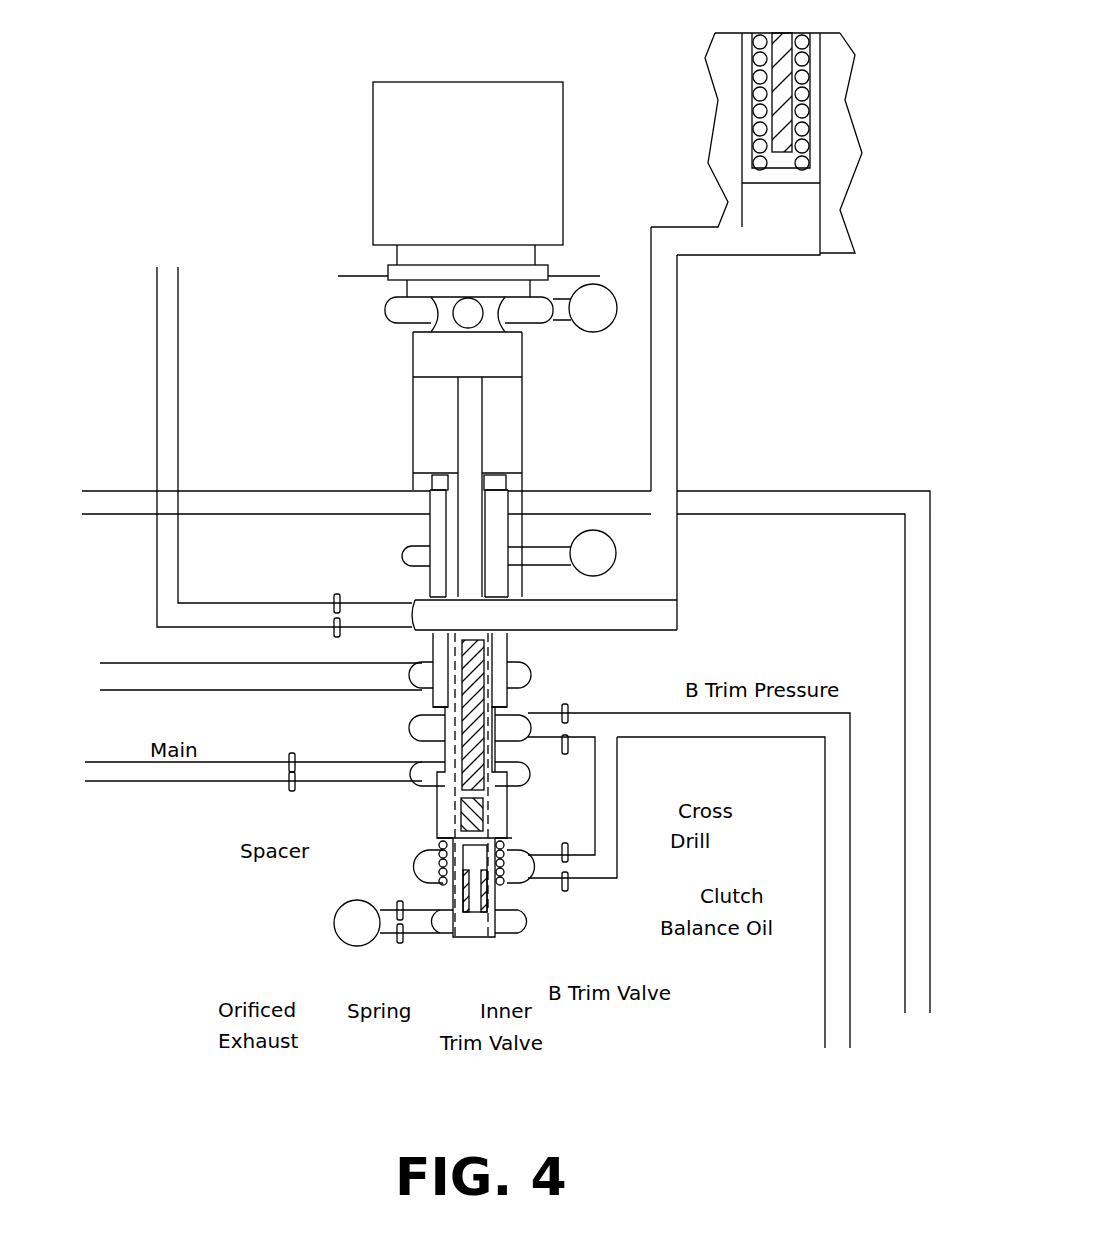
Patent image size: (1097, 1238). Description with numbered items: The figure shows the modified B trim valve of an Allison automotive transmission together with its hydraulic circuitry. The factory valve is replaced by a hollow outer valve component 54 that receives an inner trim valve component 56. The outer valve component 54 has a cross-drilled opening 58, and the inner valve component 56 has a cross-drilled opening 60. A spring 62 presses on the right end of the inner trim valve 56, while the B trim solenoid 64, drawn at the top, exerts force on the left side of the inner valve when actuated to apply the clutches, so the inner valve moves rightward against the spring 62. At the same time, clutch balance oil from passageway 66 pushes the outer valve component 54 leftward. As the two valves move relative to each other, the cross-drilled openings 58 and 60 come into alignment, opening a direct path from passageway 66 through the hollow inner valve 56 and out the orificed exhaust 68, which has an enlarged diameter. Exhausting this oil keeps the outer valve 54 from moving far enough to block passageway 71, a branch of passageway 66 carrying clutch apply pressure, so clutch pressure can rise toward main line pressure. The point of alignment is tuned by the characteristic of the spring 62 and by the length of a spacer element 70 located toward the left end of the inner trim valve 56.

The outer valve component 54 is at (500, 937).
The inner trim valve component 56 is at (478, 936).
The cross-drilled opening in outer valve component 58 is at (507, 836).
The cross-drilled opening in inner valve component 60 is at (427, 841).
The spring 62 is at (455, 938).
The B trim solenoid 64 is at (372, 143).
The passageway 66 is at (572, 866).
The exhaust 68 is at (336, 917).
The spacer element 70 is at (458, 742).
The passageway 71 is at (573, 722).